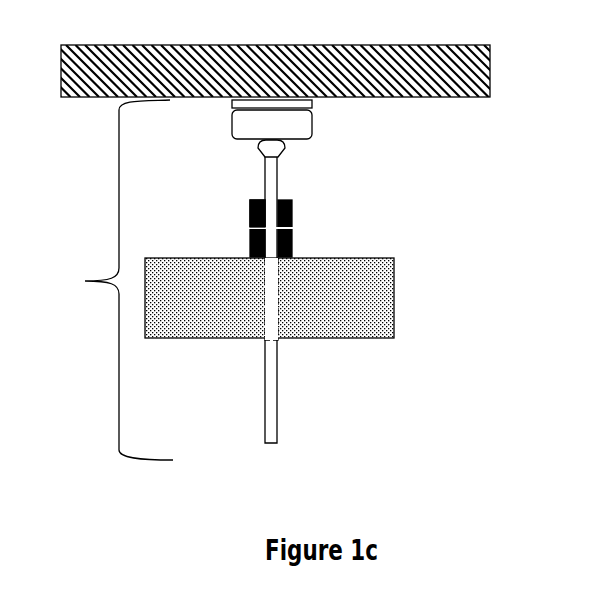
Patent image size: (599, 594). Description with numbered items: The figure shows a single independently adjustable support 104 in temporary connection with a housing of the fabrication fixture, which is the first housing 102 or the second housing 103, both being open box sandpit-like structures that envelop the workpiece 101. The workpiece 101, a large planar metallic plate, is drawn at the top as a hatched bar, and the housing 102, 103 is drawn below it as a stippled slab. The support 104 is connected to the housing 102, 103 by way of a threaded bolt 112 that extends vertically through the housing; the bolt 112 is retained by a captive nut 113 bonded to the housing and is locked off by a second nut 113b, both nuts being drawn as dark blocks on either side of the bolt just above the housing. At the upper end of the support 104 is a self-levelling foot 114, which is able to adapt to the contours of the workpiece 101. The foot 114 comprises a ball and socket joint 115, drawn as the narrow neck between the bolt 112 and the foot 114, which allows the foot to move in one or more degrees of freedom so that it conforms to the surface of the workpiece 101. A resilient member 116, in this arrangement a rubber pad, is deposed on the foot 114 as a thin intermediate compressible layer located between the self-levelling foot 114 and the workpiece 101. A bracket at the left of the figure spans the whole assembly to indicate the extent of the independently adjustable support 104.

The workpiece 101 is at (490, 70).
The resilient member 116 is at (312, 103).
The self-levelling foot 114 is at (313, 125).
The ball and socket joint 115 is at (258, 153).
The threaded bolt 112 is at (264, 387).
The captive nut 113 is at (292, 240).
The second nut 113b is at (250, 218).
The first housing 102 is at (269, 299).
The second housing 103 is at (380, 256).
The independently adjustable support 104 is at (85, 281).